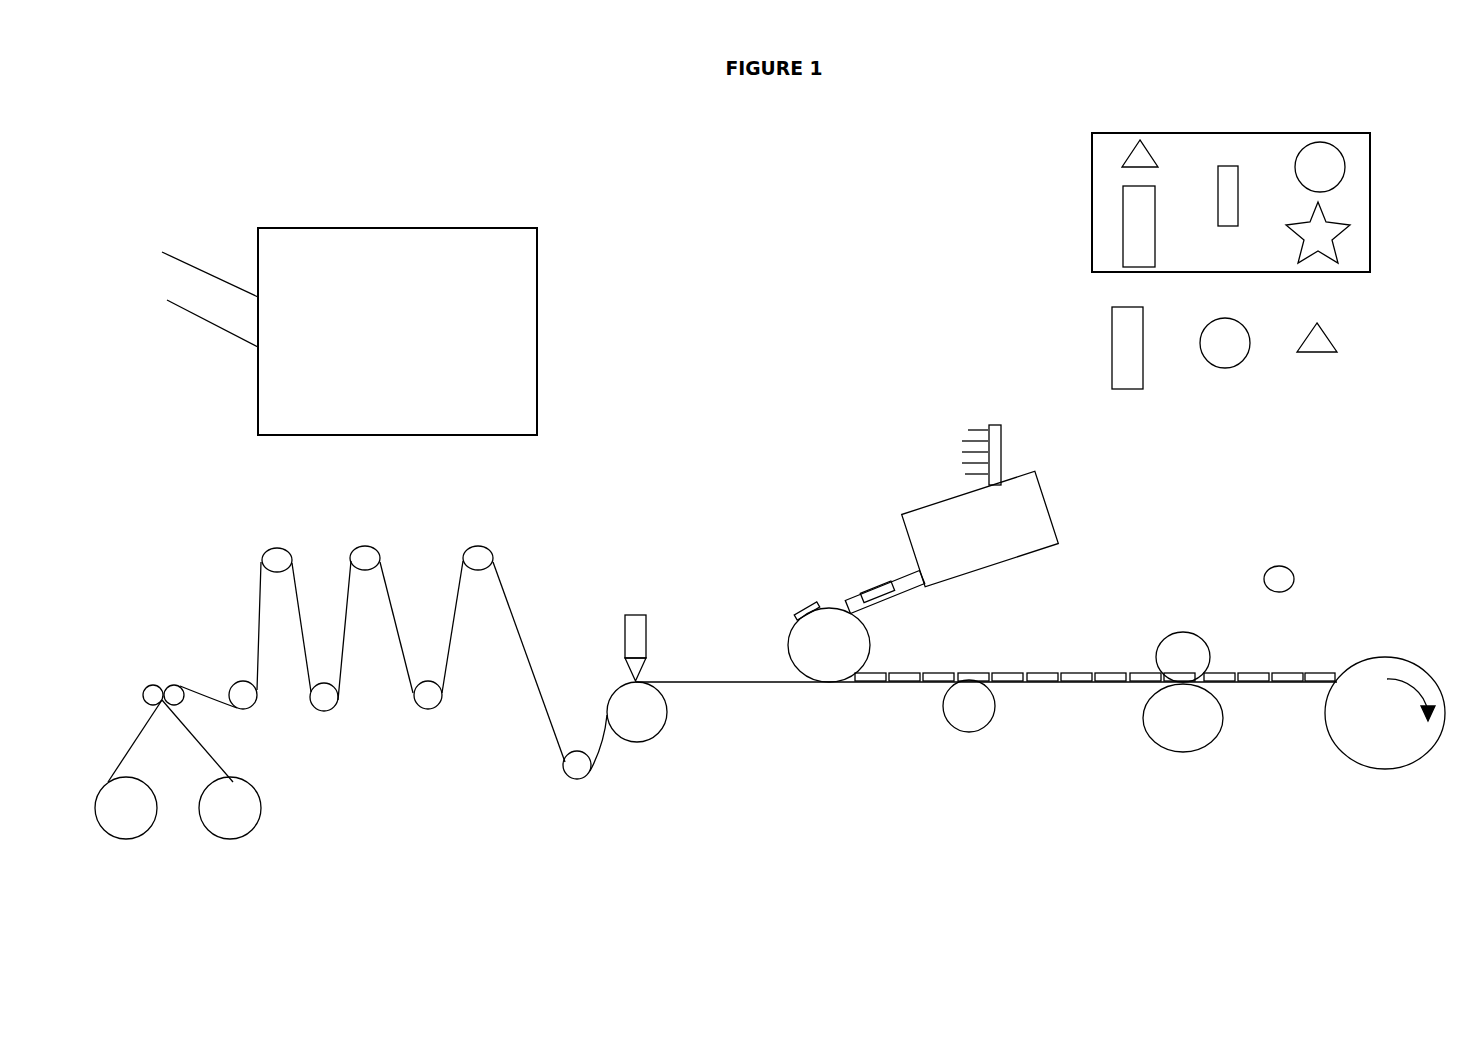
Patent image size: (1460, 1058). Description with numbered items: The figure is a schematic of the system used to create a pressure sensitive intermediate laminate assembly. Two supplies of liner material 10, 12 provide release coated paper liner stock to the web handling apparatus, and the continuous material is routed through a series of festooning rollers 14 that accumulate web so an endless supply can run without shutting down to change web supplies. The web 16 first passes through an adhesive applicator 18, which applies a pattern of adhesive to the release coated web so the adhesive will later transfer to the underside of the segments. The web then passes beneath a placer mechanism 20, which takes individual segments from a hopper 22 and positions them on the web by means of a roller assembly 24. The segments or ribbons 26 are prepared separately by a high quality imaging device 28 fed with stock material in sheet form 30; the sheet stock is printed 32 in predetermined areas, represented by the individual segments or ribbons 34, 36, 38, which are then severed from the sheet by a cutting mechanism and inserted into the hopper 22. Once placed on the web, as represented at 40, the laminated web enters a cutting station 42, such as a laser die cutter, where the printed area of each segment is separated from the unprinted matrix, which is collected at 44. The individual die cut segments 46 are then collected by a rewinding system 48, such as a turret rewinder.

The supply of liner material 10 is at (126, 840).
The supply of liner material 12 is at (239, 840).
The festooning roller 14 is at (277, 560).
The web 16 is at (547, 728).
The adhesive applicator 18 is at (623, 632).
The placer mechanism 20 is at (1020, 520).
The hopper 22 is at (1001, 443).
The roller assembly 24 is at (857, 635).
The segments or ribbons 26 is at (977, 443).
The imaging device 28 is at (385, 228).
The stock material in sheet form 30 is at (197, 265).
The printed sheet 32 is at (1228, 133).
The segment or ribbon 34 is at (1342, 160).
The segment or ribbon 36 is at (1130, 153).
The segment or ribbon 38 is at (1123, 223).
The segments placed on the web 40 is at (892, 683).
The cutting station 42 is at (1177, 618).
The matrix collection 44 is at (1290, 563).
The die cut segments 46 is at (1292, 677).
The rewinding system 48 is at (1407, 653).